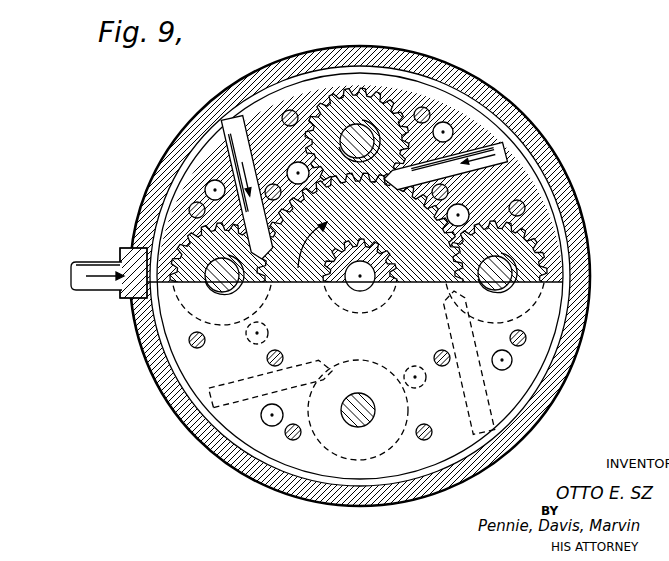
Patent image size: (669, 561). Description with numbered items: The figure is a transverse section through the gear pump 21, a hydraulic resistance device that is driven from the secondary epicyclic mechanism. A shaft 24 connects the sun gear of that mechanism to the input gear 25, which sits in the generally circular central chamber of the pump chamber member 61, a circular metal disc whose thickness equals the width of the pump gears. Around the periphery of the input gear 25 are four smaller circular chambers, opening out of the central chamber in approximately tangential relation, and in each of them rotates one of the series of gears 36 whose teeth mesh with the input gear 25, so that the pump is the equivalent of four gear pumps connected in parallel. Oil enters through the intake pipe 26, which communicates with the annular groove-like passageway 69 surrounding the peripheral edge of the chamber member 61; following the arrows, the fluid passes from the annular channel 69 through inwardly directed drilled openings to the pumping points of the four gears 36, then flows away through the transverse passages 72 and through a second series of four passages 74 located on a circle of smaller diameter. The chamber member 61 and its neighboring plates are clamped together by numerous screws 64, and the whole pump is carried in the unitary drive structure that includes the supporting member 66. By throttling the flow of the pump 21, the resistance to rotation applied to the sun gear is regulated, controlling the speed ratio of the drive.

The gear pump 21 is at (465, 96).
The shaft 24 is at (375, 309).
The input gear 25 is at (298, 281).
The intake pipe 26 is at (95, 262).
The gears 36 is at (355, 100).
The pump chamber member 61 is at (255, 127).
The screws 64 is at (288, 108).
The supporting member 66 is at (542, 148).
The annular passageway 69 is at (180, 173).
The transverse passages 72 is at (208, 183).
The passages 74 is at (299, 162).